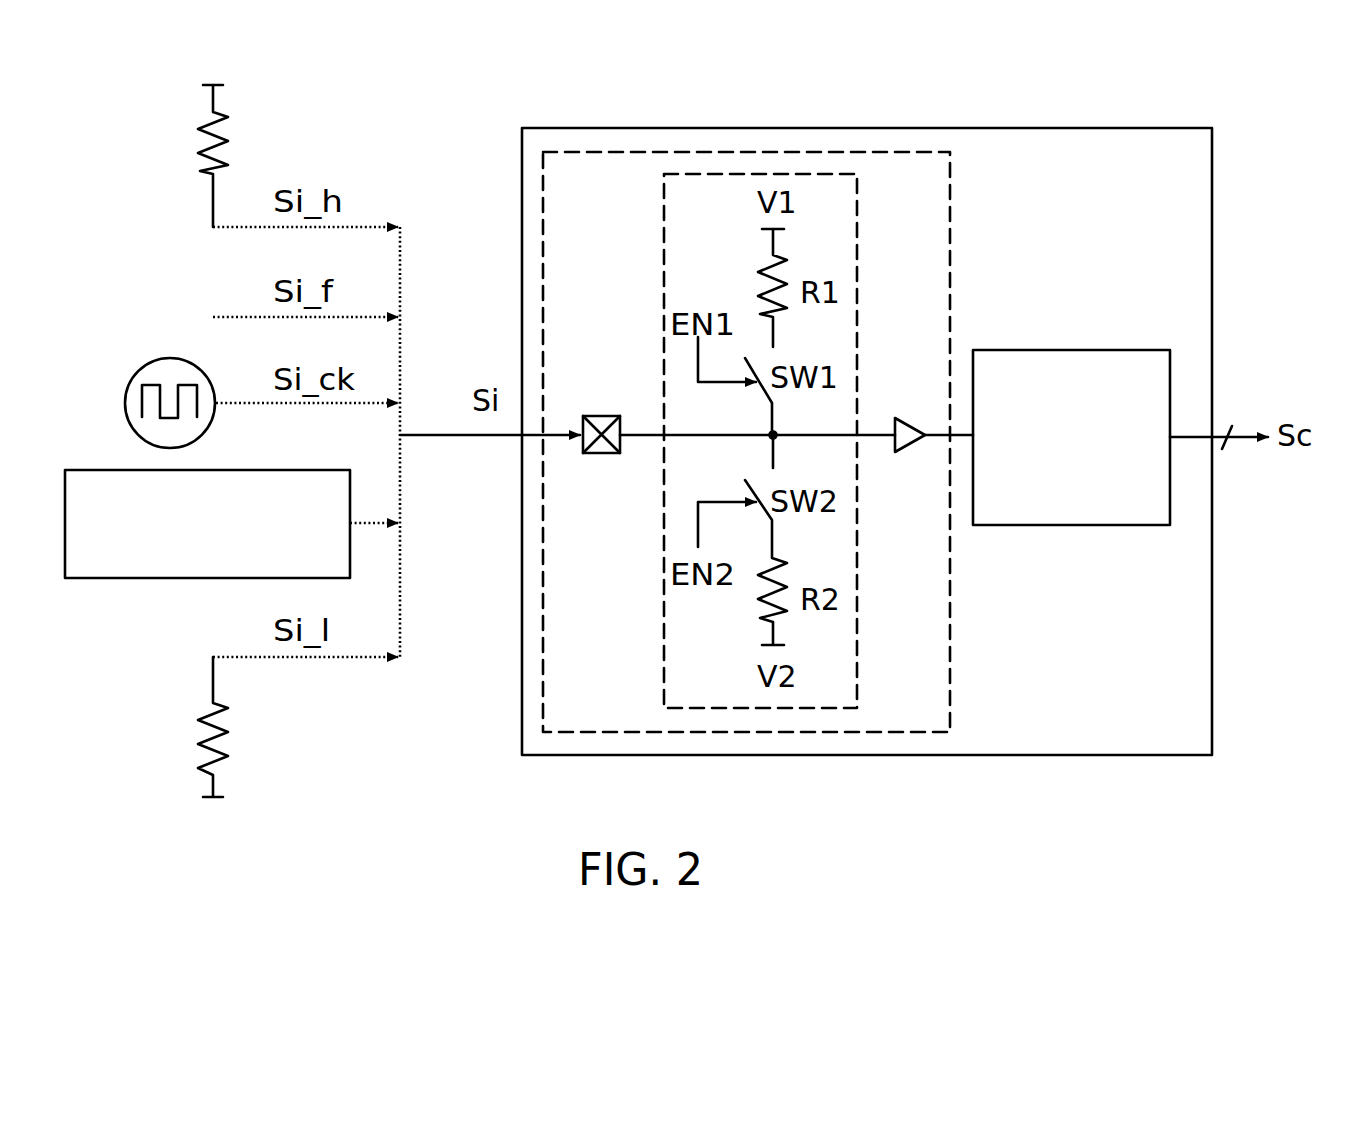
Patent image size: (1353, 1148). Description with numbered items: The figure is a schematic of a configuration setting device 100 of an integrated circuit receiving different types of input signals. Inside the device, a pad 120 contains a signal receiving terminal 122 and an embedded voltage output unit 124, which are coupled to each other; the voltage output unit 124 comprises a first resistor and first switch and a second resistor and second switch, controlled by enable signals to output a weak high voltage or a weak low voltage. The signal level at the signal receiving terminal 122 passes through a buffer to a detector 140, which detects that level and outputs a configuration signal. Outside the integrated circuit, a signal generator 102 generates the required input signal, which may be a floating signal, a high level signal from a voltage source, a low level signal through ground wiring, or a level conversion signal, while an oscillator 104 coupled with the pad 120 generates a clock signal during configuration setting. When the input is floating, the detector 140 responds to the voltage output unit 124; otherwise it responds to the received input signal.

The configuration setting device 100 is at (1212, 650).
The signal generator 102 is at (237, 562).
The oscillator 104 is at (140, 368).
The pad 120 is at (950, 598).
The signal receiving terminal 122 is at (595, 455).
The voltage output unit 124 is at (857, 610).
The detector 140 is at (1080, 527).